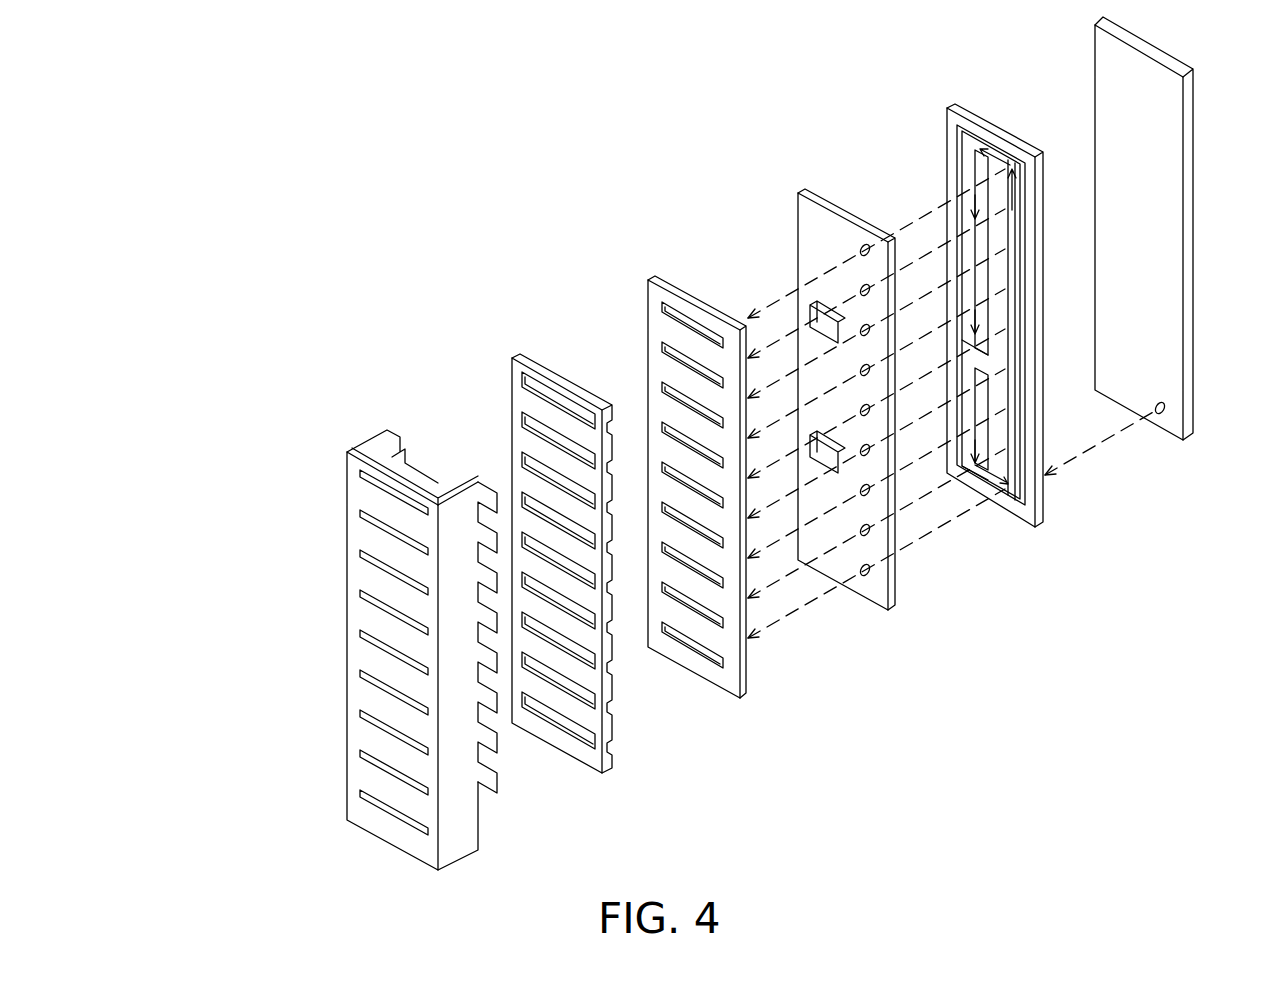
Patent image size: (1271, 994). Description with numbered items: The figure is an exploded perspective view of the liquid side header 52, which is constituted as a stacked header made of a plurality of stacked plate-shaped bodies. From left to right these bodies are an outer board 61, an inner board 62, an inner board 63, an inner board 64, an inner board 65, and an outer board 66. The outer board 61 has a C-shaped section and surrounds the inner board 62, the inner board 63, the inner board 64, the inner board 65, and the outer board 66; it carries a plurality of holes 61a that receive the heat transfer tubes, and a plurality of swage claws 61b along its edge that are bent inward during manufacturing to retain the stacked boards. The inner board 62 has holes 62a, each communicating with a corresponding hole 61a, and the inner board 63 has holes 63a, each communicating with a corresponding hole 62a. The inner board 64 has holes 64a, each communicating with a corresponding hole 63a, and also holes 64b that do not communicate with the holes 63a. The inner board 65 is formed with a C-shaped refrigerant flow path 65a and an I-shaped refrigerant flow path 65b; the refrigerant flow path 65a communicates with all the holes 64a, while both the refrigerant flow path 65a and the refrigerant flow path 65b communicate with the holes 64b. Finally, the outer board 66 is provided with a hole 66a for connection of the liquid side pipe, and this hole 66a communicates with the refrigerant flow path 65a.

The liquid side header 52 is at (278, 156).
The outer board 61 is at (415, 625).
The holes 61a is at (388, 808).
The swage claws 61b is at (490, 714).
The inner board 62 is at (530, 538).
The holes 62a is at (541, 432).
The inner board 63 is at (660, 455).
The holes 63a is at (664, 353).
The inner board 64 is at (862, 392).
The holes 64a is at (866, 571).
The holes 64b is at (822, 452).
The inner board 65 is at (986, 283).
The refrigerant flow path 65a is at (1013, 383).
The refrigerant flow path 65b is at (972, 257).
The outer board 66 is at (1133, 286).
The hole 66a is at (1160, 413).